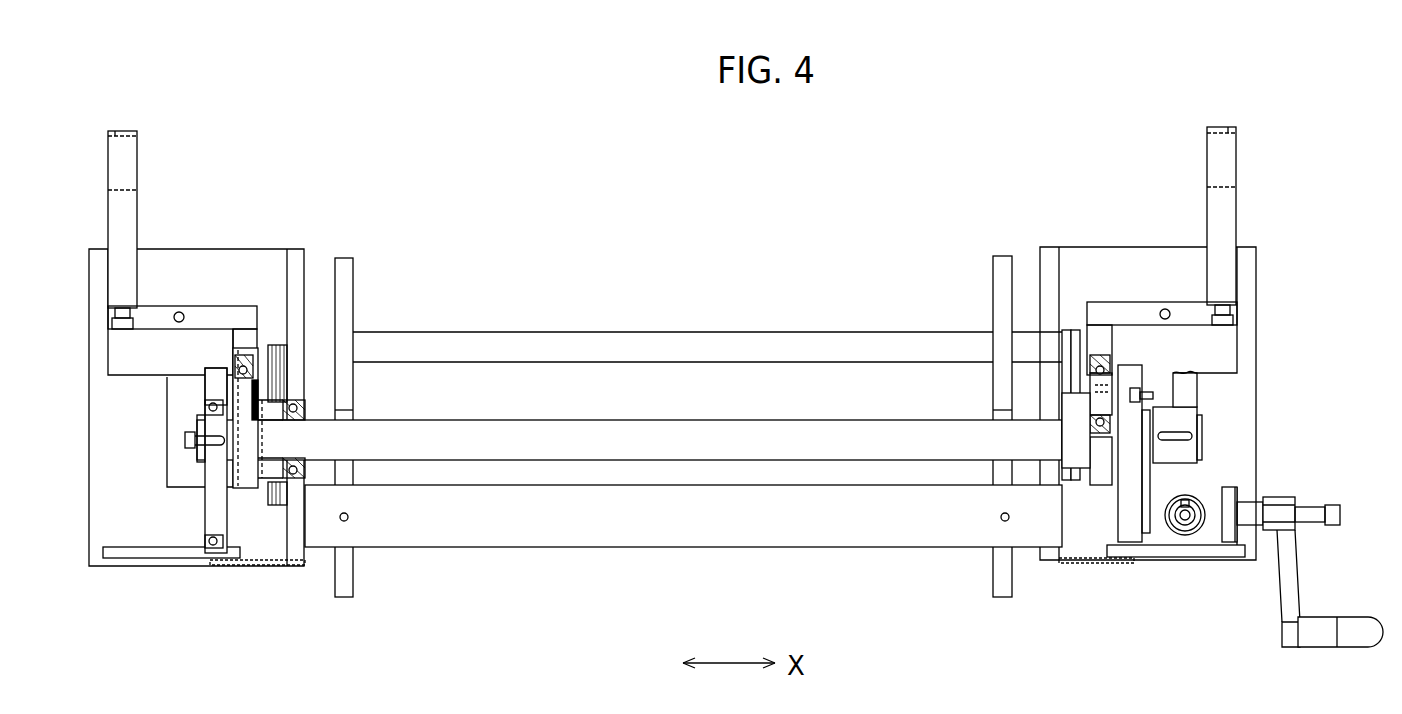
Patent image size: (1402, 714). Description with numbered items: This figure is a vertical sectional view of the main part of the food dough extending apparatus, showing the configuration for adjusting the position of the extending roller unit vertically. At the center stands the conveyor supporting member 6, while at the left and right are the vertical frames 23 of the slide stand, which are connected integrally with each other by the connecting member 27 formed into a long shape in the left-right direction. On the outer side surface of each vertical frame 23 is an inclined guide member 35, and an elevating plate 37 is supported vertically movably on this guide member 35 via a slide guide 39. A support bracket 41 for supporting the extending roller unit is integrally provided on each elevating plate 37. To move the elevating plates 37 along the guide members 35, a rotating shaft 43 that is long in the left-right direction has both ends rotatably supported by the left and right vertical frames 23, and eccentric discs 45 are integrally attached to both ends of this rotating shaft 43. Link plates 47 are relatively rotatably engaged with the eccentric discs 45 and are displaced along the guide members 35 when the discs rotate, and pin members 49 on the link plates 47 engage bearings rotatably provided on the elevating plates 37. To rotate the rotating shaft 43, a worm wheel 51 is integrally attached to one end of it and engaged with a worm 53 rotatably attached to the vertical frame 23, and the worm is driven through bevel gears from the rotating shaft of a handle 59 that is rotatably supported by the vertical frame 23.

The conveyor supporting member 6 is at (1003, 256).
The vertical frame 23 is at (255, 568).
The connecting member 27 is at (577, 535).
The guide member 35 is at (1068, 376).
The elevating plate 37 is at (243, 480).
The slide guide 39 is at (1068, 452).
The support bracket 41 is at (108, 208).
The rotating shaft 43 is at (707, 420).
The eccentric disc 45 is at (208, 510).
The link plate 47 is at (205, 378).
The pin member 49 is at (250, 392).
The worm wheel 51 is at (1188, 400).
The worm 53 is at (1183, 548).
The handle 59 is at (1327, 618).